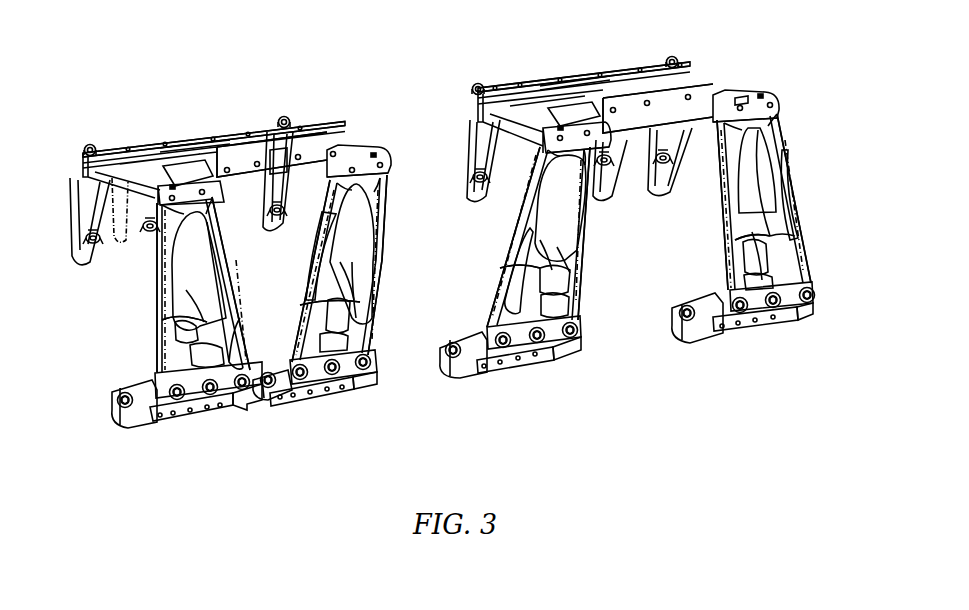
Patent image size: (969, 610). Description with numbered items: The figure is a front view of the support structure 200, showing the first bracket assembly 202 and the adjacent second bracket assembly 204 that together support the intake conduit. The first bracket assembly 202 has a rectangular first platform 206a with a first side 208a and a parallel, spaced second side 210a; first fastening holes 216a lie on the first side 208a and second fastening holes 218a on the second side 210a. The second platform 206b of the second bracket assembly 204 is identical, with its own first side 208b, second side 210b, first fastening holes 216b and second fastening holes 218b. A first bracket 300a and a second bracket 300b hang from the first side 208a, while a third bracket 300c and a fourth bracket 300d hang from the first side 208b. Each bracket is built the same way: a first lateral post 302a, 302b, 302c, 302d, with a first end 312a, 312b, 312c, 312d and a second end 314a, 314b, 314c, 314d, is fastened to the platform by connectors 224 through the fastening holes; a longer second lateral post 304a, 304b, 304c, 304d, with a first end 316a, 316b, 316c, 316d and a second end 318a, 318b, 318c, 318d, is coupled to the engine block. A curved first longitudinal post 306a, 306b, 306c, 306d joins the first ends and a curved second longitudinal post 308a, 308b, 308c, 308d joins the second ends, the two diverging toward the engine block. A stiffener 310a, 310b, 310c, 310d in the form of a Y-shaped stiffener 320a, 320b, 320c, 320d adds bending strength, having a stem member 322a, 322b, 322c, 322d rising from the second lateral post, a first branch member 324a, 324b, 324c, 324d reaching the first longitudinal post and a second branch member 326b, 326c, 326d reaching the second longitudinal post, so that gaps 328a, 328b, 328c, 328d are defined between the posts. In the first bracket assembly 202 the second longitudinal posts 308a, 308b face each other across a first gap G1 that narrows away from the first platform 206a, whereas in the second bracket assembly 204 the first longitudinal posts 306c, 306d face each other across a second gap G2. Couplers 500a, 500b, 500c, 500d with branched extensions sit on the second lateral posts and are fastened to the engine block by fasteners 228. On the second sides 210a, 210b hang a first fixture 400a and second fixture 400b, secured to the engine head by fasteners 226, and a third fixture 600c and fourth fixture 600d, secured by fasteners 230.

The support structure 200 is at (118, 62).
The first bracket assembly 202 is at (77, 160).
The second bracket assembly 204 is at (466, 98).
The first platform 206a is at (118, 138).
The second platform 206b is at (522, 80).
The first side 208a is at (235, 180).
The first side 208b is at (650, 135).
The second side 210a is at (130, 148).
The second side 210b is at (525, 86).
The first fastening holes 216a is at (196, 188).
The first fastening holes 216b is at (585, 124).
The second fastening holes 218a is at (167, 143).
The second fastening holes 218b is at (558, 80).
The connector 224 is at (172, 185).
The fastener 226 is at (90, 145).
The fastener 228 is at (117, 398).
The fastener 230 is at (275, 204).
The first bracket 300a is at (154, 342).
The second bracket 300b is at (370, 342).
The third bracket 300c is at (487, 286).
The fourth bracket 300d is at (808, 262).
The first lateral post 302a is at (183, 236).
The first lateral post 302b is at (386, 184).
The first lateral post 302c is at (590, 188).
The first lateral post 302d is at (775, 100).
The second lateral post 304a is at (222, 390).
The second lateral post 304b is at (346, 398).
The second lateral post 304c is at (560, 350).
The second lateral post 304d is at (790, 313).
The first longitudinal post 306a is at (155, 274).
The first longitudinal post 306b is at (384, 238).
The first longitudinal post 306c is at (590, 205).
The first longitudinal post 306d is at (715, 186).
The second longitudinal post 308a is at (229, 250).
The second longitudinal post 308b is at (302, 286).
The second longitudinal post 308c is at (520, 210).
The second longitudinal post 308d is at (790, 173).
The stiffener 310a is at (176, 316).
The stiffener 310b is at (338, 285).
The stiffener 310c is at (539, 270).
The stiffener 310d is at (773, 232).
The first end 312a is at (168, 206).
The first end 312b is at (391, 160).
The first end 312c is at (612, 126).
The first end 312d is at (730, 90).
The second end 314a is at (226, 194).
The second end 314b is at (330, 186).
The second end 314c is at (540, 158).
The second end 314d is at (757, 118).
The first end 316a is at (140, 428).
The first end 316b is at (377, 372).
The first end 316c is at (582, 326).
The first end 316d is at (725, 308).
The second end 318a is at (250, 405).
The second end 318b is at (276, 404).
The second end 318c is at (489, 371).
The second end 318d is at (812, 302).
The Y-shaped stiffener 320a is at (184, 330).
The Y-shaped stiffener 320b is at (338, 295).
The Y-shaped stiffener 320c is at (541, 276).
The Y-shaped stiffener 320d is at (775, 243).
The stem member 322a is at (185, 362).
The stem member 322b is at (332, 305).
The stem member 322c is at (541, 290).
The stem member 322d is at (780, 256).
The first branch member 324a is at (178, 292).
The first branch member 324b is at (348, 260).
The first branch member 324c is at (561, 245).
The first branch member 324d is at (740, 250).
The second branch member 326b is at (306, 264).
The second branch member 326c is at (525, 248).
The second branch member 326d is at (777, 210).
The gaps 328a is at (176, 352).
The gaps 328b is at (314, 322).
The gaps 328c is at (512, 297).
The gaps 328d is at (748, 153).
The first fixture 400a is at (70, 235).
The second fixture 400b is at (298, 200).
The first coupler 500a is at (170, 424).
The second coupler 500b is at (293, 420).
The third coupler 500c is at (500, 375).
The fourth coupler 500d is at (736, 333).
The third fixture 600c is at (470, 162).
The fourth fixture 600d is at (665, 160).
The first gap G1 is at (244, 307).
The second gap G2 is at (720, 236).